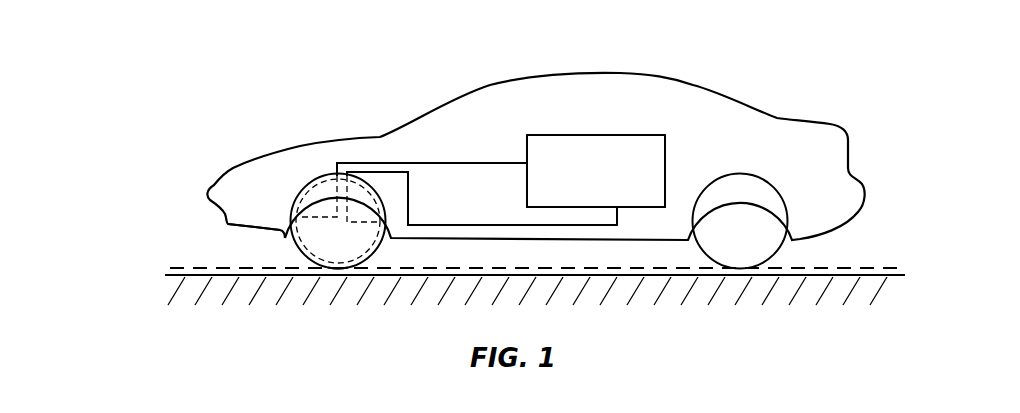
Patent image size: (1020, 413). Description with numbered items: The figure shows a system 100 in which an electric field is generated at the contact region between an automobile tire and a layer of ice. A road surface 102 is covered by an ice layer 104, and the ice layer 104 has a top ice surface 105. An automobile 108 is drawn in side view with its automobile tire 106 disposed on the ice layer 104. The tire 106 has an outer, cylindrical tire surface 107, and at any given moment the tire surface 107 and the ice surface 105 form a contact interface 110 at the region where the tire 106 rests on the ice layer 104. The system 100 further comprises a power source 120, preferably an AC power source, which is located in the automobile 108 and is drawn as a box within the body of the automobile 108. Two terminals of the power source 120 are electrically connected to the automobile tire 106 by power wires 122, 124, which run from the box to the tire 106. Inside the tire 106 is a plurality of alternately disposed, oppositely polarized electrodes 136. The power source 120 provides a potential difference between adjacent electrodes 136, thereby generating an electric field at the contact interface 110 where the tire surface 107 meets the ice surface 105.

The system 100 is at (307, 89).
The road surface 102 is at (527, 291).
The ice layer 104 is at (218, 273).
The top ice surface 105 is at (200, 267).
The automobile tire 106 is at (338, 180).
The tire surface 107 is at (264, 231).
The automobile 108 is at (535, 156).
The contact interface 110 is at (312, 264).
The power source 120 is at (596, 171).
The power wire 122 is at (472, 163).
The power wire 124 is at (482, 225).
The electrodes 136 is at (308, 194).